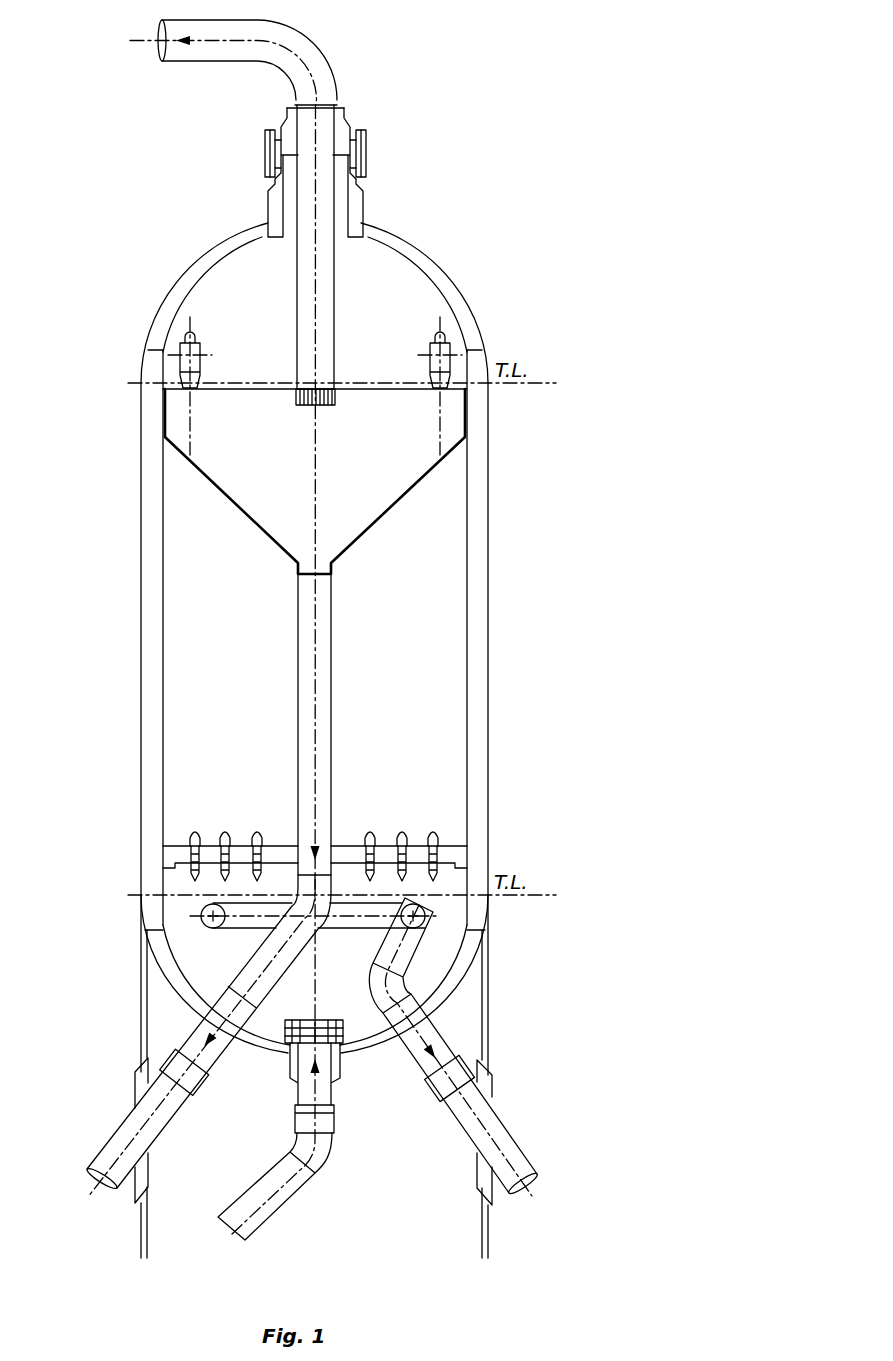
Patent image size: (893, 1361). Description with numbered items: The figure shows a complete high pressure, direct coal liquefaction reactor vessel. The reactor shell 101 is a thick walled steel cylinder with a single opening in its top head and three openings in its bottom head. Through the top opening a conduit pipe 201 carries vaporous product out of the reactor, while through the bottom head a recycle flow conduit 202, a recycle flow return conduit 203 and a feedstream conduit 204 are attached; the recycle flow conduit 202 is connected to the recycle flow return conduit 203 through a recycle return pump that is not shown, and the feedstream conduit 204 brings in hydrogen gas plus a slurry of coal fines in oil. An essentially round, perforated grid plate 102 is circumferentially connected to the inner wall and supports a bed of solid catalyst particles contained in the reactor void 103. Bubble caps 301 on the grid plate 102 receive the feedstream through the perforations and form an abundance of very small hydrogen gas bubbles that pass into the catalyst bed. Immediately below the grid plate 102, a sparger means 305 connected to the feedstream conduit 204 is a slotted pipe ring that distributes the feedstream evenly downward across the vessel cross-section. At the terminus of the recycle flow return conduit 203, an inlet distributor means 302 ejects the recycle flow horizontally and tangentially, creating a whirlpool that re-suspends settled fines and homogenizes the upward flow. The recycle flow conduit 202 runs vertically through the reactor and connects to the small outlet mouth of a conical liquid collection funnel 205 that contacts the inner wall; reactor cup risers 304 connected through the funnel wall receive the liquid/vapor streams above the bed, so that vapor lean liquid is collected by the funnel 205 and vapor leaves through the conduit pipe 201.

The reactor shell 101 is at (488, 650).
The grid plate 102 is at (463, 846).
The reactor void 103 is at (190, 632).
The conduit pipe 201 is at (325, 57).
The recycle flow conduit 202 is at (331, 695).
The recycle flow return conduit 203 is at (327, 1160).
The feedstream conduit 204 is at (505, 1125).
The conical liquid collection funnel 205 is at (407, 495).
The bubble caps 301 is at (193, 835).
The inlet distributor means 302 is at (328, 1010).
The reactor cup risers 304 is at (180, 347).
The sparger means 305 is at (222, 905).